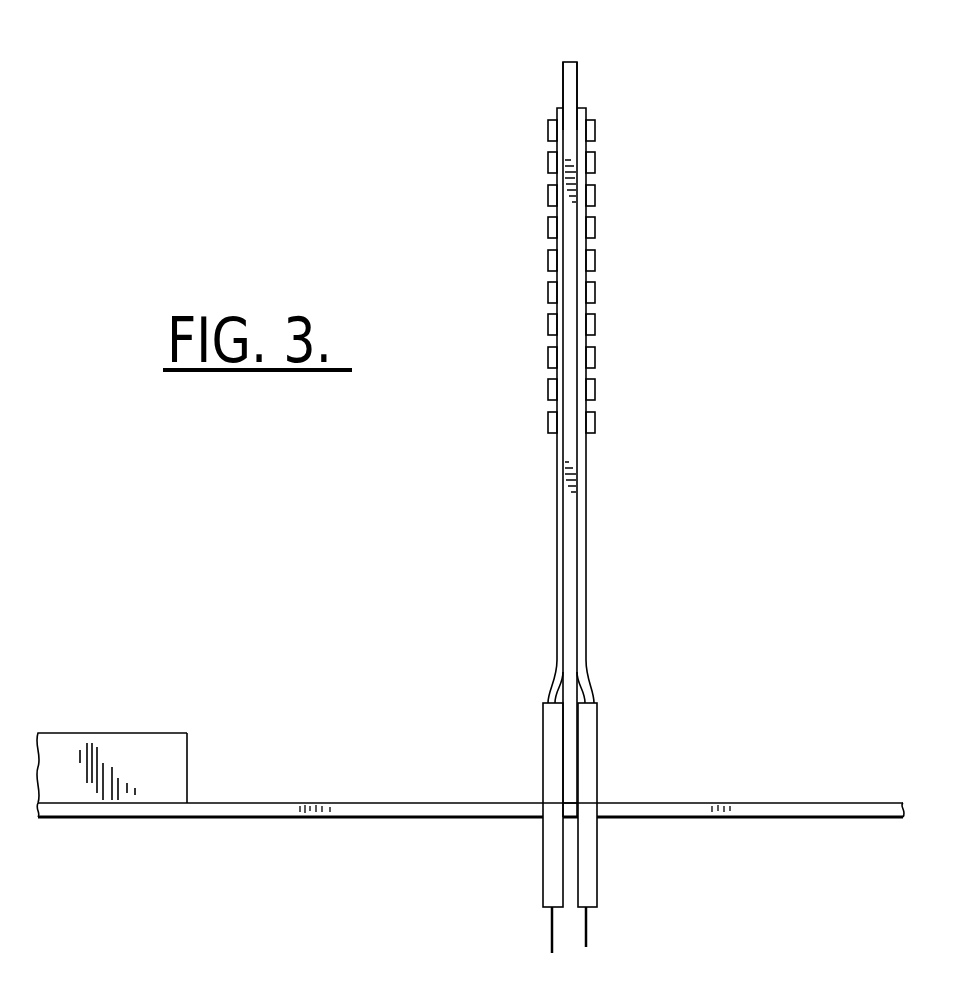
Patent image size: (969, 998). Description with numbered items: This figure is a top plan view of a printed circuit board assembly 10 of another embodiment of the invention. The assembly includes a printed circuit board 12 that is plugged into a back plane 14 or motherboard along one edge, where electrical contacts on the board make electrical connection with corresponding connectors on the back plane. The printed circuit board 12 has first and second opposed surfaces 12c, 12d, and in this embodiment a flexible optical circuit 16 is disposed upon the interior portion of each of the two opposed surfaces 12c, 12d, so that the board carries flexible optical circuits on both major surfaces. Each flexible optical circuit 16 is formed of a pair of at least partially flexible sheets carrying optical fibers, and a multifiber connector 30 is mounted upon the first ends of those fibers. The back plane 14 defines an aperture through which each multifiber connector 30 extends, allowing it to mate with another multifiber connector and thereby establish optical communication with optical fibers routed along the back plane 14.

The printed circuit board assembly 10 is at (679, 487).
The printed circuit board 12 is at (578, 70).
The first opposed surface 12c is at (578, 90).
The second opposed surface 12d is at (563, 88).
The back plane 14 is at (715, 810).
The flexible optical circuit 16 is at (558, 452).
The multifiber connector 30 is at (553, 752).